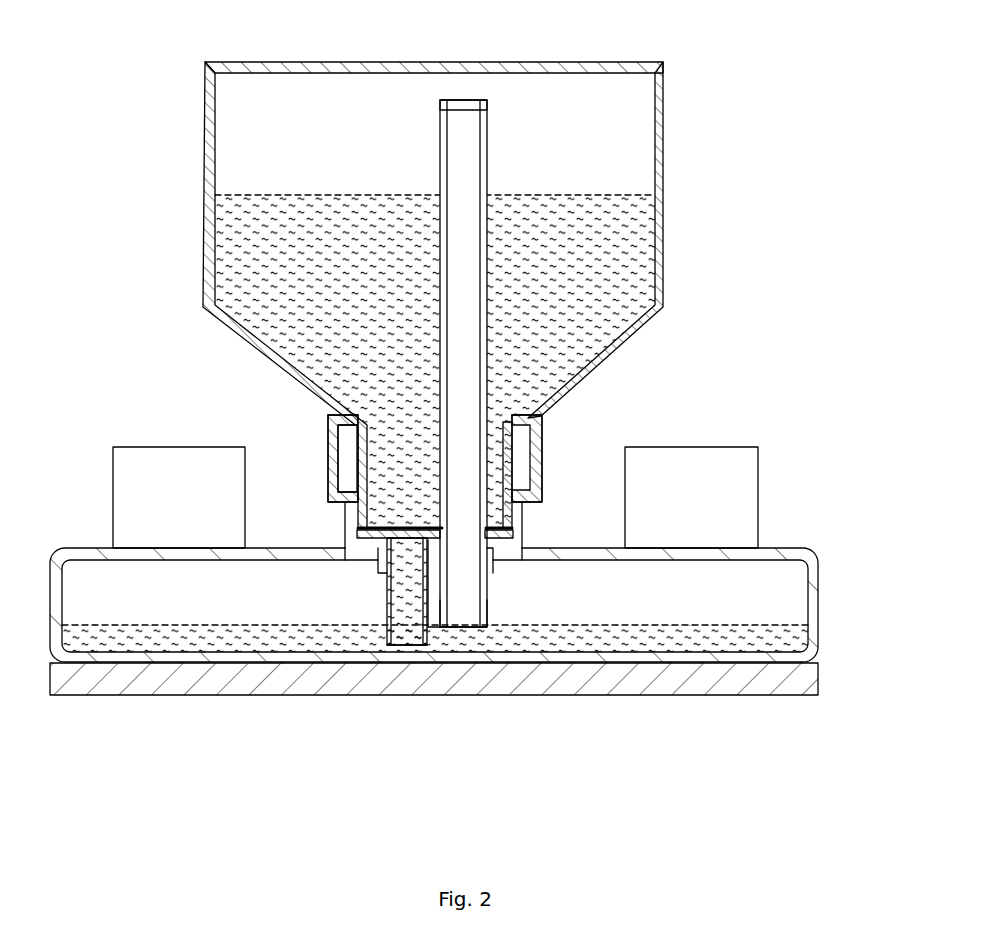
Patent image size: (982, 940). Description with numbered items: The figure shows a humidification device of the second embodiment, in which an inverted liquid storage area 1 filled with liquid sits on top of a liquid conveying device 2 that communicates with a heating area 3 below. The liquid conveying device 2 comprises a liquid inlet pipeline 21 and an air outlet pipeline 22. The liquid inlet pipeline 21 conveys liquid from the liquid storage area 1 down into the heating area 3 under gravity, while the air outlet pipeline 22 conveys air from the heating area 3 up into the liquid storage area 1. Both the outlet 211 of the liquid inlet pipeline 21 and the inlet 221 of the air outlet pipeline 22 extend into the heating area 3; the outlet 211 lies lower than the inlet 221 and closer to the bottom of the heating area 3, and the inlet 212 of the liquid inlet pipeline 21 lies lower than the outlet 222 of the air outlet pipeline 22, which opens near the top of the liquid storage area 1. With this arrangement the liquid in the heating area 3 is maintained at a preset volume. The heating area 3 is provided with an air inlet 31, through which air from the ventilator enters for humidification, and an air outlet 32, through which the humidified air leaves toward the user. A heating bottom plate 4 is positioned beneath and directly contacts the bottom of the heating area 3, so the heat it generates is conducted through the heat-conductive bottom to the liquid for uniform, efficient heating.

The liquid storage area 1 is at (625, 120).
The liquid conveying device 2 is at (533, 428).
The liquid inlet pipeline 21 is at (402, 573).
The outlet of the liquid inlet pipeline 211 is at (405, 642).
The inlet of the liquid inlet pipeline 212 is at (398, 538).
The air outlet pipeline 22 is at (465, 168).
The inlet of the air outlet pipeline 221 is at (468, 620).
The outlet of the air outlet pipeline 222 is at (465, 100).
The heating area 3 is at (770, 593).
The air inlet 31 is at (135, 495).
The air outlet 32 is at (733, 488).
The heating bottom plate 4 is at (648, 680).